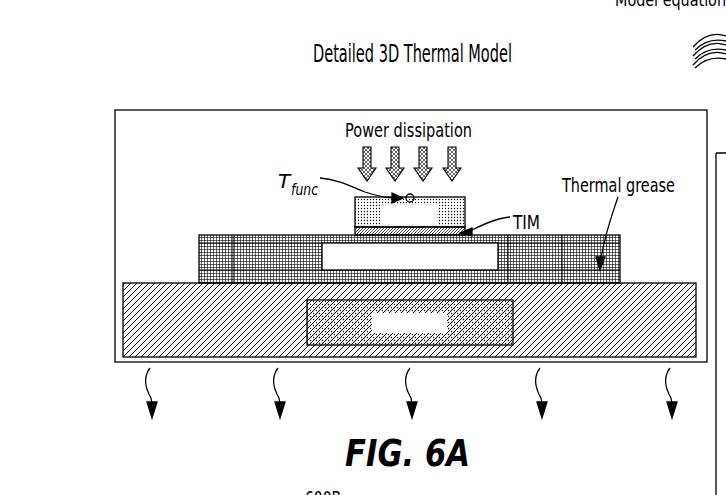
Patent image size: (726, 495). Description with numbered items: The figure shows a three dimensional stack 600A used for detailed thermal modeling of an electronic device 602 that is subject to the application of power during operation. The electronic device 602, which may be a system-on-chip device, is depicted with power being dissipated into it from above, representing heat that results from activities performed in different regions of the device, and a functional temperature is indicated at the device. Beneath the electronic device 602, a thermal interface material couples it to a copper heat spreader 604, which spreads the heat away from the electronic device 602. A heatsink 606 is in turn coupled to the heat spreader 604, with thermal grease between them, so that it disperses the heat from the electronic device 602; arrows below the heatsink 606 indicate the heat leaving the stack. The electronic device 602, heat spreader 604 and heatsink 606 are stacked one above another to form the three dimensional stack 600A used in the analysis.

The three dimensional stack 600A is at (165, 144).
The electronic device 602 is at (455, 215).
The heat spreader 604 is at (210, 257).
The heatsink 606 is at (662, 300).